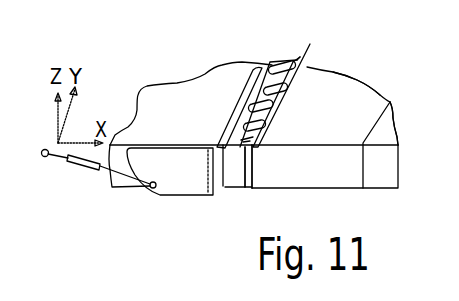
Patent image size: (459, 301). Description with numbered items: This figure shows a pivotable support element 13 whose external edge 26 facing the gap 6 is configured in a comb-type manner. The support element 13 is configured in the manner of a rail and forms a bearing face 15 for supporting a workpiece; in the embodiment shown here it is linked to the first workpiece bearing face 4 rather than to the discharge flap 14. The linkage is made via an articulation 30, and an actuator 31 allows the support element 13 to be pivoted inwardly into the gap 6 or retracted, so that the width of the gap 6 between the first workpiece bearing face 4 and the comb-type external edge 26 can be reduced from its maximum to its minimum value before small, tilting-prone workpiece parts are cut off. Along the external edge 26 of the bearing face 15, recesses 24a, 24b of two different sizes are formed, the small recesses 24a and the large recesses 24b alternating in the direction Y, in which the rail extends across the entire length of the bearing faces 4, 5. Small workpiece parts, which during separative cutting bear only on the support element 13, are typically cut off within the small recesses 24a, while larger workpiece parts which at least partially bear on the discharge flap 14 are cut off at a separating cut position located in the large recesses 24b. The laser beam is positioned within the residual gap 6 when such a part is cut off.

The first workpiece bearing face 4 is at (193, 88).
The bearing face 5 is at (384, 125).
The gap 6 is at (298, 55).
The support element 13 is at (225, 78).
The discharge flap 14 is at (357, 90).
The bearing face 15 is at (253, 151).
The small recesses 24a is at (247, 128).
The large recesses 24b is at (252, 108).
The external edge 26 is at (288, 84).
The articulation 30 is at (137, 158).
The actuator 31 is at (62, 158).